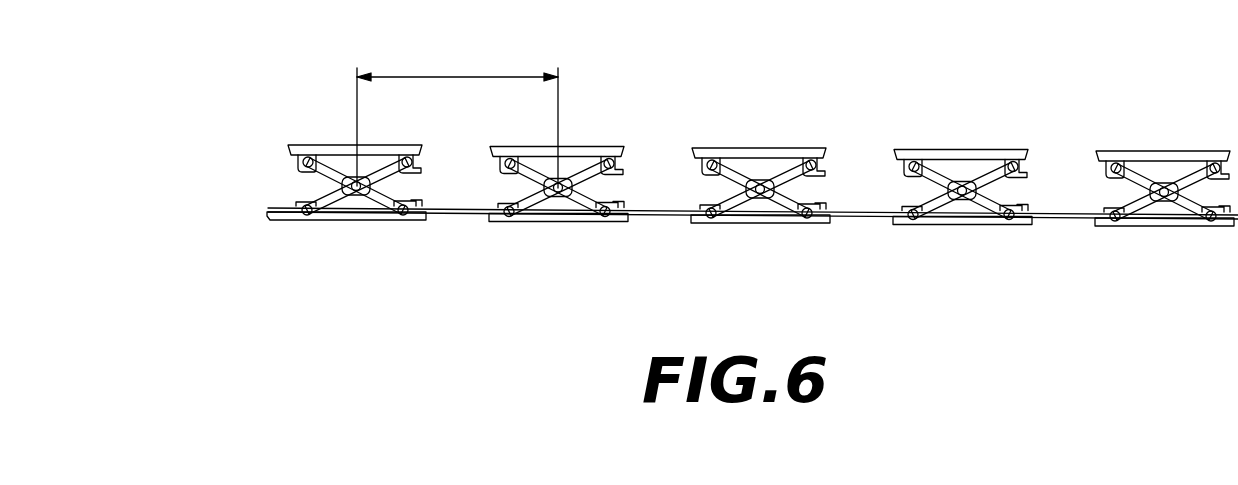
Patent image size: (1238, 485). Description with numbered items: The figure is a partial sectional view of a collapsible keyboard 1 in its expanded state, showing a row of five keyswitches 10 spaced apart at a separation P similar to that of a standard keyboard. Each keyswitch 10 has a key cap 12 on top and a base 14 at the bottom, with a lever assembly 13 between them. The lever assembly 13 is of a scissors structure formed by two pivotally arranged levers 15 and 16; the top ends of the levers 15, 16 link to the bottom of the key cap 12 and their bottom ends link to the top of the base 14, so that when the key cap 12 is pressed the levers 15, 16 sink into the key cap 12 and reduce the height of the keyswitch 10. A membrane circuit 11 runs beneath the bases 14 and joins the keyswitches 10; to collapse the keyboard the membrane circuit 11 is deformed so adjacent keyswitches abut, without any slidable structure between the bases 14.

The conveying apparatus 1 is at (808, 93).
The keyswitch 10 is at (336, 243).
The membrane circuit 11 is at (657, 214).
The key cap 12 is at (355, 94).
The lever assembly 13 is at (397, 262).
The base 14 is at (319, 245).
The lever 15 is at (355, 231).
The lever 16 is at (397, 231).